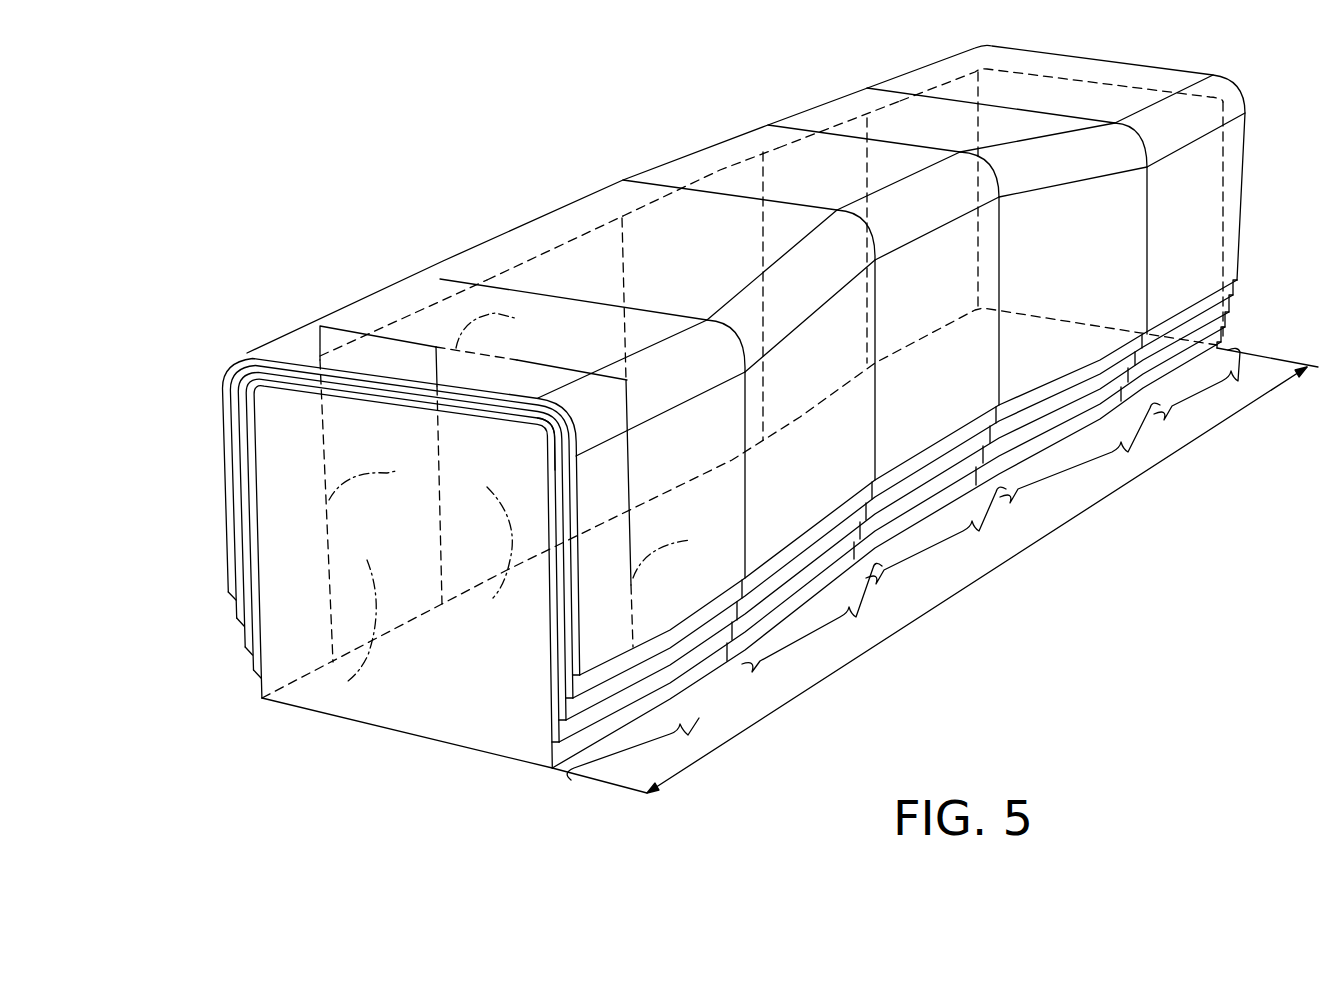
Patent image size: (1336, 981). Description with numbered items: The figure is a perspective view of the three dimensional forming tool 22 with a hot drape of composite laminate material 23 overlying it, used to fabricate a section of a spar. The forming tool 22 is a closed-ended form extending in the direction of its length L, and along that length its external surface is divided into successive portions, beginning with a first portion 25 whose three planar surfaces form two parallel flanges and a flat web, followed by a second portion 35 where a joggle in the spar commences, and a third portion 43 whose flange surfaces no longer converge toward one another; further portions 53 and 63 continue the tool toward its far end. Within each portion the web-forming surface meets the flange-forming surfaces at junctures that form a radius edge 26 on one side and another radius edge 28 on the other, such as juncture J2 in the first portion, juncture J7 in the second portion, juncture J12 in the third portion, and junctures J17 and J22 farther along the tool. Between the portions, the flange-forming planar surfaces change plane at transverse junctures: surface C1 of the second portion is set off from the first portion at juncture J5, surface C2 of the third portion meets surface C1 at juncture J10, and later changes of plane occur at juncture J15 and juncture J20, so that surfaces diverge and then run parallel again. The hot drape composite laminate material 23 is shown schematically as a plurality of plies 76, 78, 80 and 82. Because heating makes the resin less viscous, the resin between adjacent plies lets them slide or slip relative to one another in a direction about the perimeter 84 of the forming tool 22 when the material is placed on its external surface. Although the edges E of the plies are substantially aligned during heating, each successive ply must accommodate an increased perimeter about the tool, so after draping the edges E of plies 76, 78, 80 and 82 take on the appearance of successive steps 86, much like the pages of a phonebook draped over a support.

The three dimensional forming tool 22 is at (428, 722).
The hot drape composite laminate material 23 is at (474, 290).
The first portion 25 is at (647, 746).
The radius edge 26 is at (552, 440).
The other radius edge 28 is at (257, 390).
The second portion 35 is at (818, 617).
The third portion 43 is at (945, 535).
The fourth segment 53 is at (1080, 453).
The fifth segment 63 is at (1212, 384).
The ply 76 is at (264, 381).
The ply 78 is at (268, 373).
The ply 80 is at (276, 366).
The ply 82 is at (268, 360).
The perimeter 84 is at (524, 441).
The successive steps 86 is at (232, 665).
The edges of plies E is at (255, 670).
The length L is at (1008, 592).
The planar surface C1 is at (346, 631).
The planar surface C2 is at (486, 553).
The juncture J2 is at (380, 323).
The juncture J5 is at (437, 372).
The juncture J7 is at (562, 238).
The juncture J10 is at (622, 276).
The juncture J12 is at (713, 173).
The juncture J15 is at (762, 228).
The juncture J17 is at (843, 124).
The juncture J20 is at (866, 178).
The juncture J22 is at (928, 90).